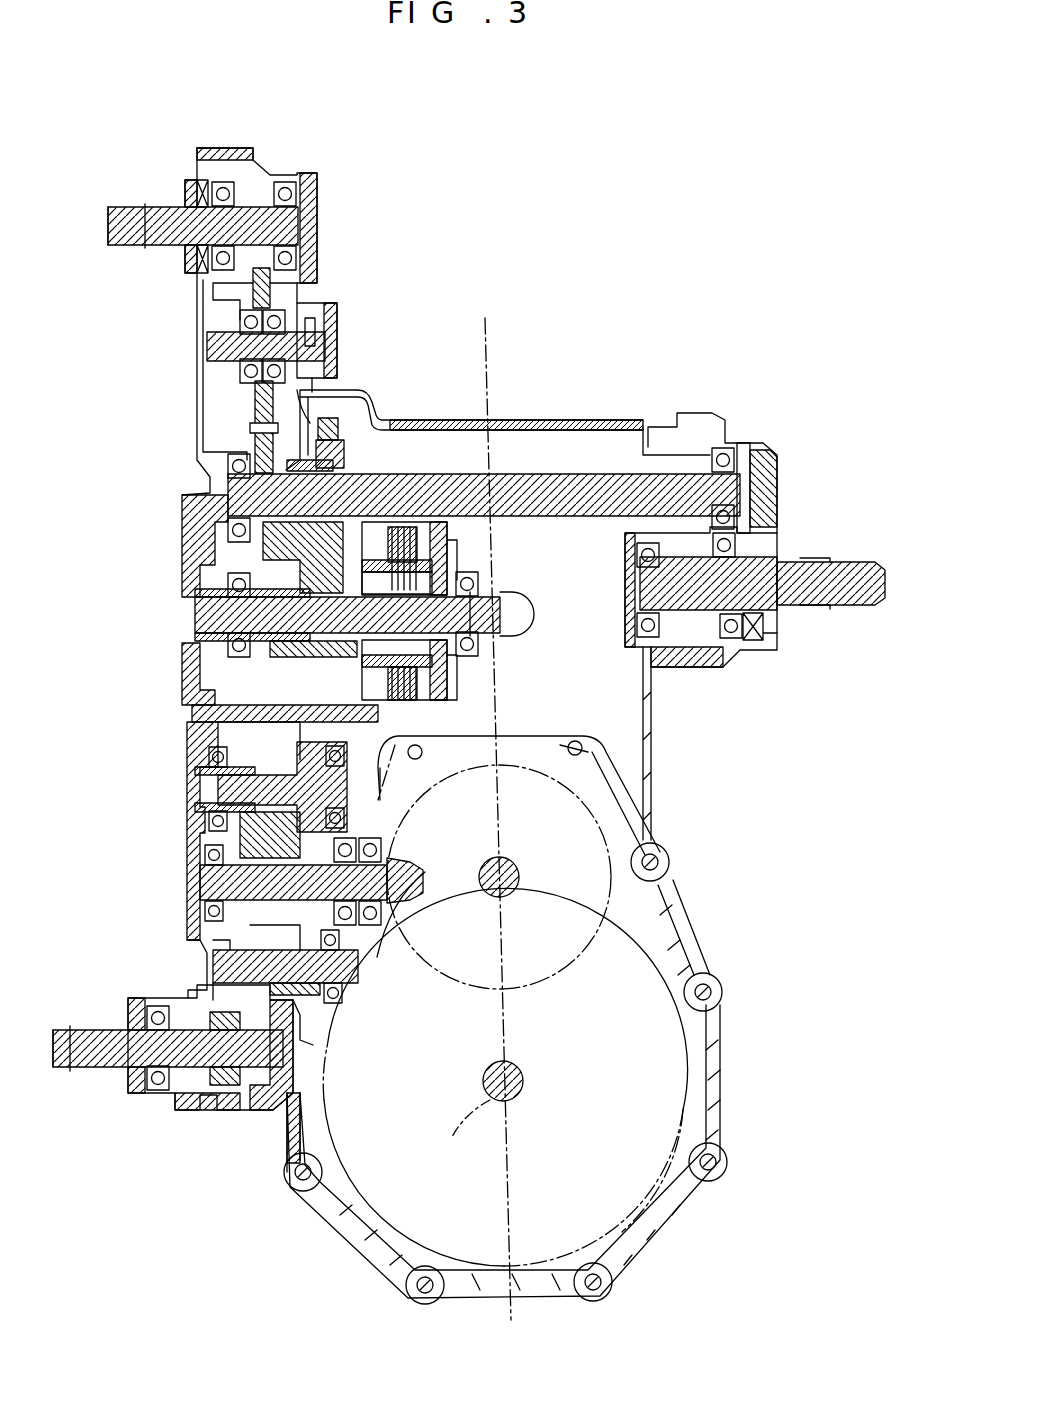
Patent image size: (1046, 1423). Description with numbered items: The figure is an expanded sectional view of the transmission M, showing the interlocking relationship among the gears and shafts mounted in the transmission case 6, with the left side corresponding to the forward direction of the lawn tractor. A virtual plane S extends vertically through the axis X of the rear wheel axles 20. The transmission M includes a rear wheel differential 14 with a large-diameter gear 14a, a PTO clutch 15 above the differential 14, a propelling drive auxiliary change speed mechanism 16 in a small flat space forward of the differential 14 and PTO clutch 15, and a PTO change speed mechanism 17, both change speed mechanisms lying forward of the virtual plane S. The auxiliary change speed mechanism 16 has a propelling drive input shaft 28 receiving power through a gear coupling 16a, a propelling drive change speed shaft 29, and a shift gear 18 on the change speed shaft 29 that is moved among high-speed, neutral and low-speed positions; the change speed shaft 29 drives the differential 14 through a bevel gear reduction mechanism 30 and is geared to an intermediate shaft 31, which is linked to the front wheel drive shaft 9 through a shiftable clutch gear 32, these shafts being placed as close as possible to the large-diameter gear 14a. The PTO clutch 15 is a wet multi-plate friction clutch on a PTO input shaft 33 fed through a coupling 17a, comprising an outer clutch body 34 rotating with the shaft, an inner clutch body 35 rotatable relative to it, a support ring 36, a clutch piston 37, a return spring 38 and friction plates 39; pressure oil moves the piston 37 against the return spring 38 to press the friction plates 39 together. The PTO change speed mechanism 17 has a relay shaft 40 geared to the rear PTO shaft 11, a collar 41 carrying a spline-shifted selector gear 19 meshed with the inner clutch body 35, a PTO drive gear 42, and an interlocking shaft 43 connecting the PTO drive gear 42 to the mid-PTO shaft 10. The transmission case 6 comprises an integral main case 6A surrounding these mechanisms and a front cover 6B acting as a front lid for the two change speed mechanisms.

The transmission case 6 is at (447, 660).
The main case 6A is at (665, 756).
The front cover 6B is at (172, 528).
The front wheel drive shaft 9 is at (87, 1064).
The mid-PTO shaft 10 is at (118, 218).
The rear PTO shaft 11 is at (840, 560).
The rear wheel differential 14 is at (661, 945).
The large-diameter gear 14a is at (690, 1100).
The PTO clutch 15 is at (457, 718).
The propelling drive auxiliary change speed mechanism 16 is at (280, 728).
The gear coupling 16a is at (218, 768).
The PTO change speed mechanism 17 is at (385, 457).
The coupling 17a is at (200, 596).
The shift gear 18 is at (250, 922).
The selector gear 19 is at (349, 414).
The rear wheel axles 20 is at (522, 1080).
The propelling drive input shaft 28 is at (242, 794).
The propelling drive change speed shaft 29 is at (212, 890).
The bevel gear reduction mechanism 30 is at (630, 852).
The intermediate shaft 31 is at (300, 1000).
The clutch gear 32 is at (205, 1096).
The PTO input shaft 33 is at (222, 622).
The outer clutch body 34 is at (480, 693).
The inner clutch body 35 is at (310, 650).
The support ring 36 is at (450, 545).
The clutch piston 37 is at (431, 720).
The return spring 38 is at (365, 676).
The friction plates 39 is at (409, 514).
The relay shaft 40 is at (585, 472).
The collar 41 is at (325, 393).
The PTO drive gear 42 is at (258, 458).
The interlocking shaft 43 is at (210, 348).
The virtual plane S is at (492, 804).
The axis X is at (465, 1137).
The transmission M is at (247, 1208).